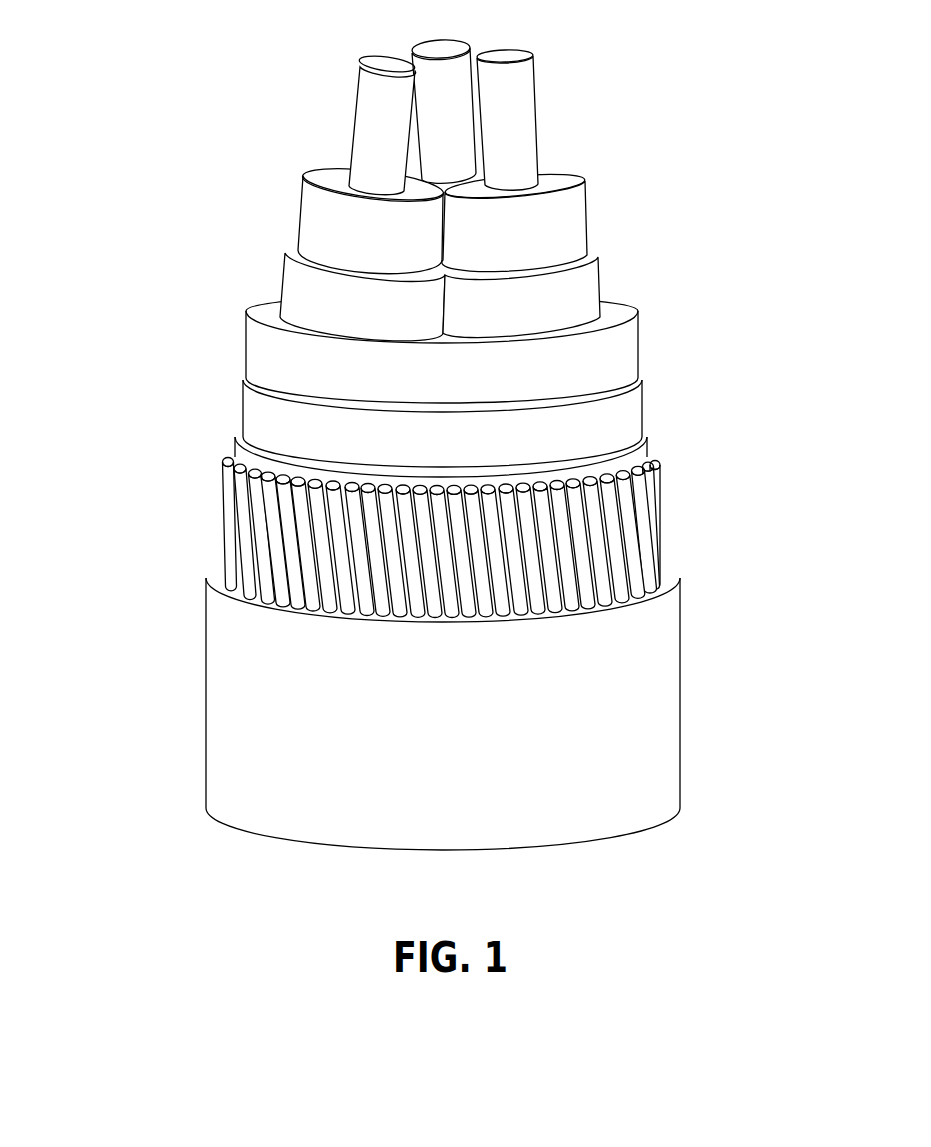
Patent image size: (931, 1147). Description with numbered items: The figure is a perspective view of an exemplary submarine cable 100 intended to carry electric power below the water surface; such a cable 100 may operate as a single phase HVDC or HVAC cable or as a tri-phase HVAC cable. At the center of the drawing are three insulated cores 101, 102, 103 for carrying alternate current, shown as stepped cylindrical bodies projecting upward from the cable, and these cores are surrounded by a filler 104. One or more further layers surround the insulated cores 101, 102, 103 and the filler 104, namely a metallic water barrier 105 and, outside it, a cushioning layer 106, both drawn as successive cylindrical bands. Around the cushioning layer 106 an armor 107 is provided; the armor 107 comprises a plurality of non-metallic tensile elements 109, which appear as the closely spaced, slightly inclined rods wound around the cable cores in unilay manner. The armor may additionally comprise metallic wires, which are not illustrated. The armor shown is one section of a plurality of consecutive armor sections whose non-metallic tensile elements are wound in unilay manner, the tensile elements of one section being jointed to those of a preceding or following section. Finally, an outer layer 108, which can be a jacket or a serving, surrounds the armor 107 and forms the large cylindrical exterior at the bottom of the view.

The submarine cable 100 is at (266, 153).
The insulated core 101 is at (493, 40).
The insulated core 102 is at (609, 206).
The insulated core 103 is at (266, 232).
The filler 104 is at (608, 355).
The metallic water barrier 105 is at (620, 425).
The cushioning layer 106 is at (622, 466).
The armor 107 is at (206, 520).
The outer layer 108 is at (592, 687).
The non-metallic tensile elements 109 is at (630, 543).